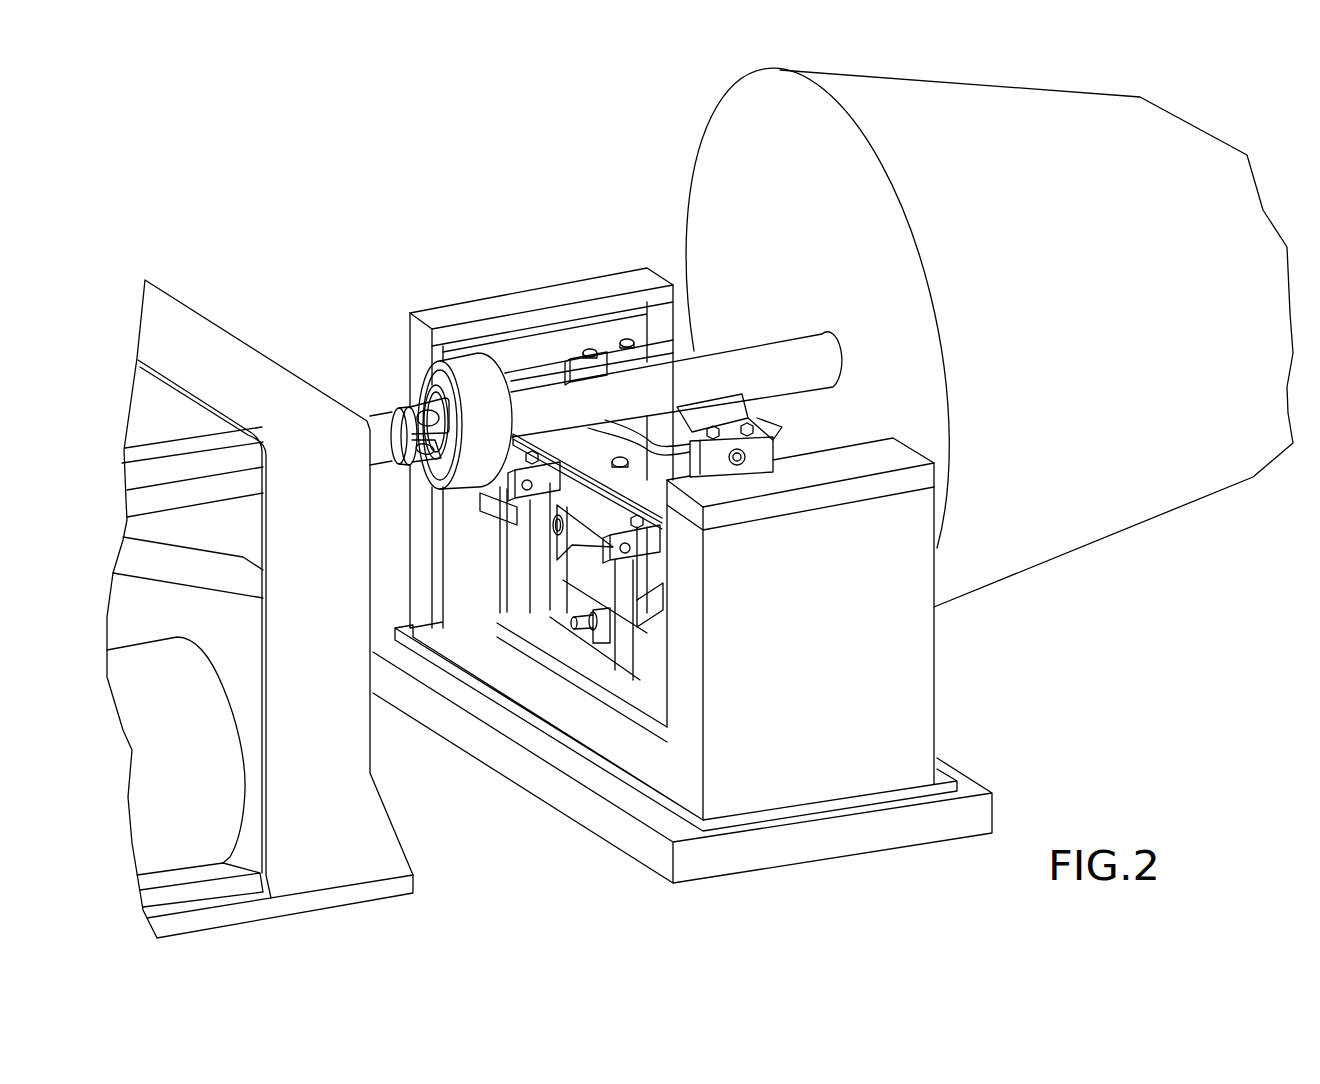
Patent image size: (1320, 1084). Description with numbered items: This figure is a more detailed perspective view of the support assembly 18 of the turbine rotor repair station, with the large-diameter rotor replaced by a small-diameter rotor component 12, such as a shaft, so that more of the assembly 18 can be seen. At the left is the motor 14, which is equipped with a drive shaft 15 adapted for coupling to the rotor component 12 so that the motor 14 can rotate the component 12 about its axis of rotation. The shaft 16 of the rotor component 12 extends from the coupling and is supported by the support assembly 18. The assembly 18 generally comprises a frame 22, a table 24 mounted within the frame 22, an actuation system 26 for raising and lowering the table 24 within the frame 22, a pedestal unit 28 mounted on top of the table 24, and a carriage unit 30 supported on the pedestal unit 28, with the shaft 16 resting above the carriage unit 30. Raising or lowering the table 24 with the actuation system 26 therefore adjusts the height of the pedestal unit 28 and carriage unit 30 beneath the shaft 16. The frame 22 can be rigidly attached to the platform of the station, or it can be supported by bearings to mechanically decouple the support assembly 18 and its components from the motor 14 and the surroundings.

The rotor component 12 is at (1118, 522).
The motor 14 is at (240, 298).
The drive shaft 15 is at (383, 427).
The rotor shaft 16 is at (810, 345).
The support assembly 18 is at (570, 262).
The frame 22 is at (922, 703).
The table 24 is at (571, 504).
The actuation system 26 is at (560, 645).
The pedestal unit 28 is at (645, 482).
The carriage unit 30 is at (712, 406).